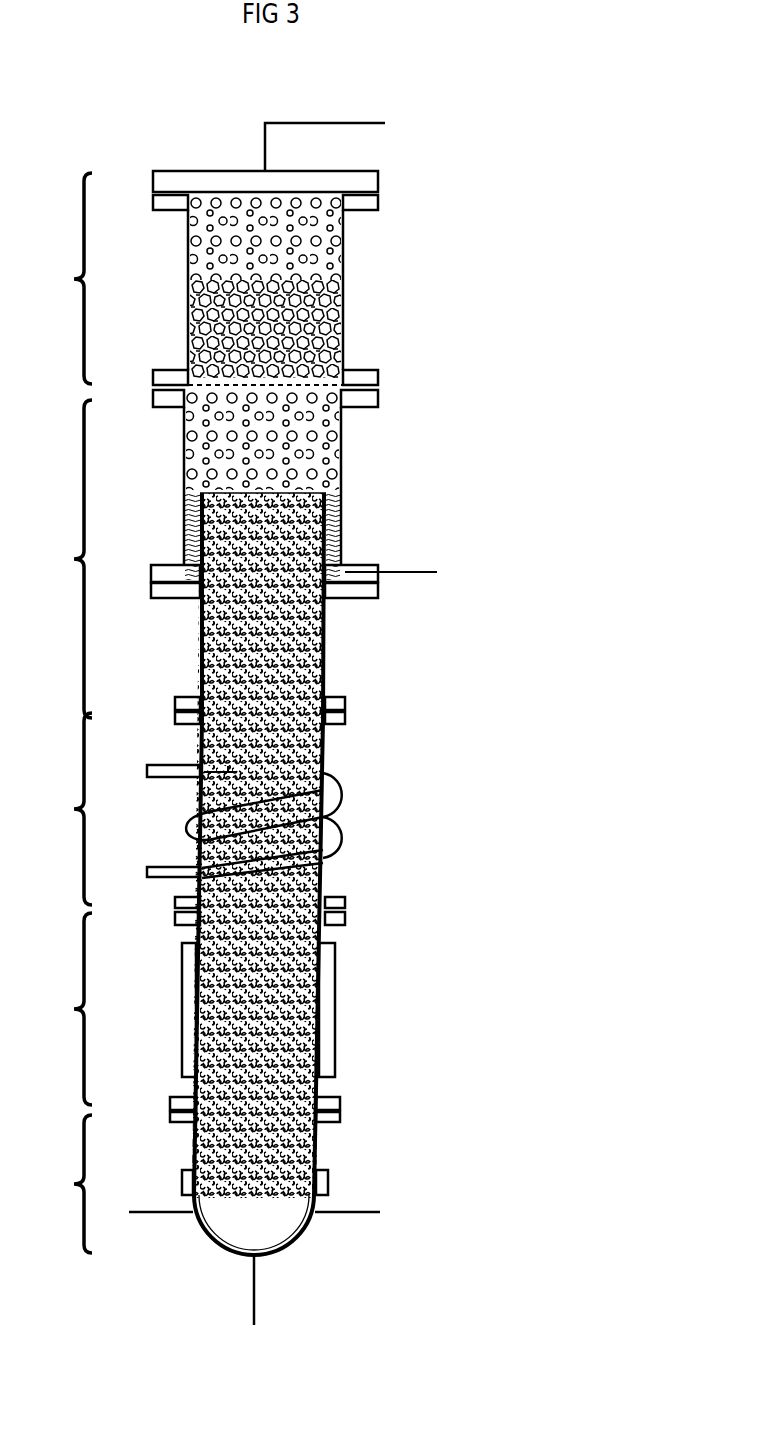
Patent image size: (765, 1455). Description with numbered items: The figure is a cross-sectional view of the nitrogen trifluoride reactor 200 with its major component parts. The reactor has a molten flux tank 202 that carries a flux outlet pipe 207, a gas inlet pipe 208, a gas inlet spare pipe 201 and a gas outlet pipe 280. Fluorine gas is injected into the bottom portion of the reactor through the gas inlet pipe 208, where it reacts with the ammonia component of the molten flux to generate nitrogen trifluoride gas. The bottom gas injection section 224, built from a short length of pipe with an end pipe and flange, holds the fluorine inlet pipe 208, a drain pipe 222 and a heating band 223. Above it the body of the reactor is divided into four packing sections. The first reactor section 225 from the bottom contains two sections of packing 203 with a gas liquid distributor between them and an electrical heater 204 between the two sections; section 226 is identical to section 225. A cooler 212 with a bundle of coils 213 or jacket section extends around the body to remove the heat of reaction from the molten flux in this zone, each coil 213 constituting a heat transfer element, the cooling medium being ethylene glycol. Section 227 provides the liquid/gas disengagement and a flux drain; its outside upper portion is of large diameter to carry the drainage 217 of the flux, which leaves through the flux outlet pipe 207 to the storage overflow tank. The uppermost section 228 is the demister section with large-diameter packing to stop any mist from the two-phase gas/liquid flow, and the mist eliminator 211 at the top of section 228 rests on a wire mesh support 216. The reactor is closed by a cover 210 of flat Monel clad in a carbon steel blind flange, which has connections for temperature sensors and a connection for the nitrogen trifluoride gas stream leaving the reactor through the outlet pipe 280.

The nitrogen trifluoride reactor 200 is at (215, 1250).
The gas inlet spare pipe 201 is at (178, 1215).
The molten flux tank 202 is at (246, 844).
The packing 203 is at (217, 1141).
The electrical heater 204 is at (178, 1030).
The flux outlet pipe 207 is at (391, 556).
The gas inlet pipe 208 is at (337, 1215).
The cover 210 is at (203, 163).
The mist eliminator 211 is at (263, 342).
The cooler 212 is at (172, 862).
The coils 213 is at (284, 825).
The wire mesh support 216 is at (210, 380).
The drainage 217 is at (200, 517).
The drain pipe 222 is at (248, 1297).
The heating band 223 is at (345, 1186).
The bottom gas injection section 224 is at (60, 1184).
The first reactor section 225 is at (60, 1009).
The second packing section 226 is at (60, 809).
The liquid/gas disengagement section 227 is at (61, 559).
The demister section 228 is at (61, 278).
The gas outlet pipe 280 is at (310, 122).